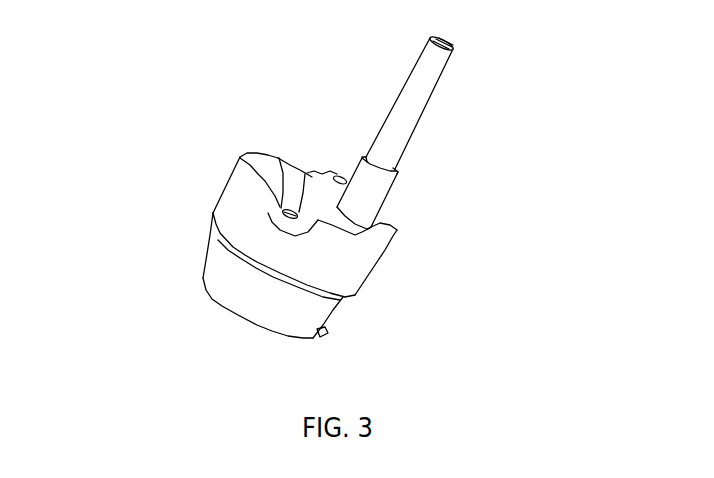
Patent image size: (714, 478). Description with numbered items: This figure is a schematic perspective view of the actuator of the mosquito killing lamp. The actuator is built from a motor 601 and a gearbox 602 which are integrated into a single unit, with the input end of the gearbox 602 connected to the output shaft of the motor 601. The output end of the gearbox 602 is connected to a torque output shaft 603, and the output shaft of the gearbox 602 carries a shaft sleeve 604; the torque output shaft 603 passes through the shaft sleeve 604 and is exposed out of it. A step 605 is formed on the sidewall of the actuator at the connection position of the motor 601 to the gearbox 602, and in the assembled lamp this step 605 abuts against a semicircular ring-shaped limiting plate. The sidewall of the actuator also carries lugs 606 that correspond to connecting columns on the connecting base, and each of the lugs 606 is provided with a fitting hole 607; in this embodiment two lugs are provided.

The motor 601 is at (197, 275).
The gearbox 602 is at (241, 212).
The torque output shaft 603 is at (469, 102).
The shaft sleeve 604 is at (352, 140).
The step 605 is at (209, 245).
The lugs 606 is at (255, 146).
The fitting hole 607 is at (303, 150).